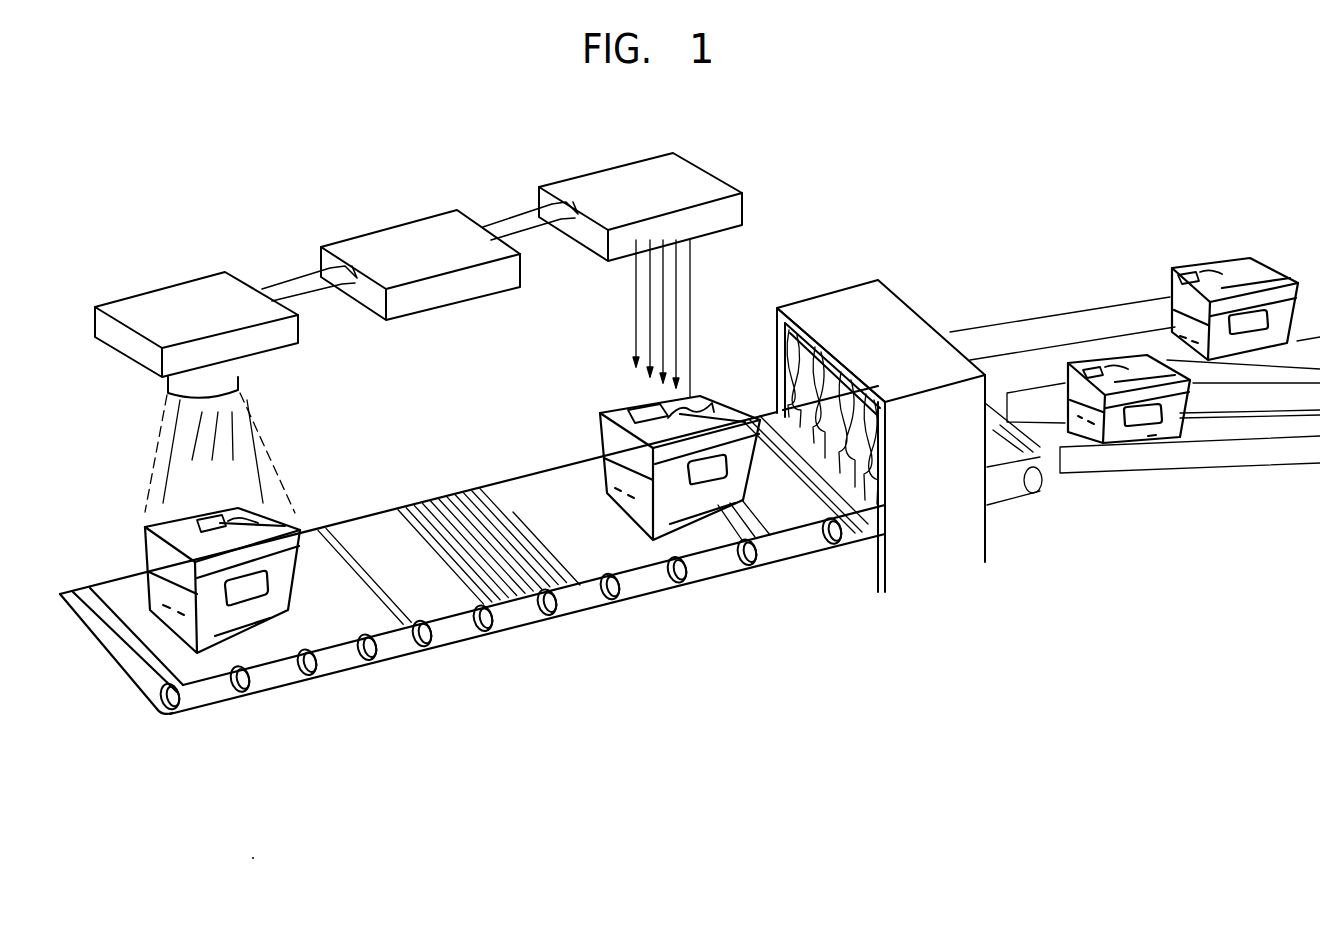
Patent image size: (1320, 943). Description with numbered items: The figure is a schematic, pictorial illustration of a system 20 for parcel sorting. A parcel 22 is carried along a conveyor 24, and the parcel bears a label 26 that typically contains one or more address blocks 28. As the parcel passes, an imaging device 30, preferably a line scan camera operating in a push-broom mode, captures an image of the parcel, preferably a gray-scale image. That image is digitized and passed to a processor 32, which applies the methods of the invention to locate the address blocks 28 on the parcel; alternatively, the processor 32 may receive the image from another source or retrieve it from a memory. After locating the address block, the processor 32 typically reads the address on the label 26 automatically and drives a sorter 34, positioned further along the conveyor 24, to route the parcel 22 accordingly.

The system 20 is at (233, 128).
The parcel 22 is at (292, 580).
The conveyor 24 is at (423, 512).
The label 26 is at (208, 522).
The address blocks 28 is at (228, 527).
The imaging device 30 is at (150, 312).
The processor 32 is at (378, 250).
The sorter 34 is at (597, 190).